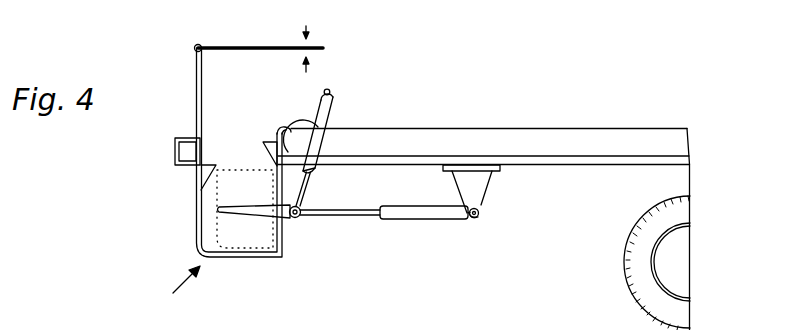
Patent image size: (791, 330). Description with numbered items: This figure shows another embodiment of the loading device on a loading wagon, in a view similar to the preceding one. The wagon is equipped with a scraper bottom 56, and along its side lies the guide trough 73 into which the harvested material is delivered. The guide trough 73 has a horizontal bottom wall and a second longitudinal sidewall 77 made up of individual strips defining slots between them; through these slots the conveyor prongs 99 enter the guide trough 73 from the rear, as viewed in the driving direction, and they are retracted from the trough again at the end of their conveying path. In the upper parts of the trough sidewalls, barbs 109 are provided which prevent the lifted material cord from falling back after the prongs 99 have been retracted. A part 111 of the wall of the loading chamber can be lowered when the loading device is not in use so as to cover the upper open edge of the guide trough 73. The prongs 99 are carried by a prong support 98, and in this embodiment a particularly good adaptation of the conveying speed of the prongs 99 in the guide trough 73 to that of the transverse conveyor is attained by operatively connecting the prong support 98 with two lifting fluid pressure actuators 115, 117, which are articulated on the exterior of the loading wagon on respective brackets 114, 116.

The scraper bottom 56 is at (487, 128).
The guide trough 73 is at (180, 291).
The second longitudinal sidewall 77 is at (283, 238).
The prong support 98 is at (300, 218).
The prongs 99 is at (250, 210).
The barbs 109 is at (272, 130).
The part of the wall of the loading chamber 111 is at (263, 46).
The bracket 114 is at (366, 117).
The lifting fluid pressure actuator 115 is at (368, 146).
The bracket 116 is at (566, 247).
The lifting fluid pressure actuator 117 is at (422, 220).